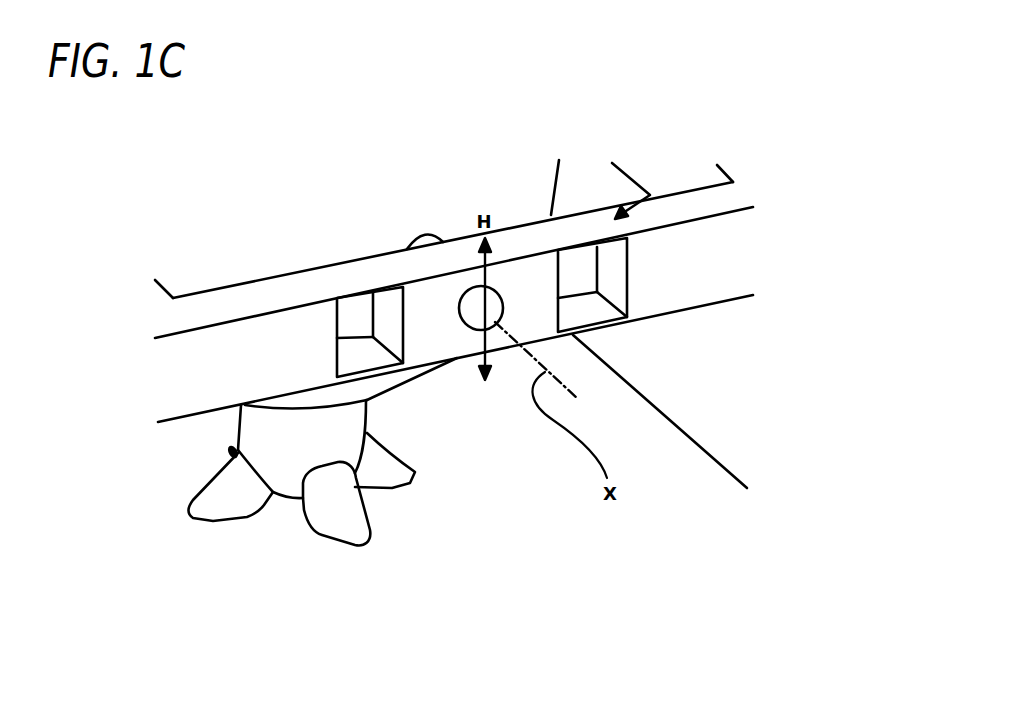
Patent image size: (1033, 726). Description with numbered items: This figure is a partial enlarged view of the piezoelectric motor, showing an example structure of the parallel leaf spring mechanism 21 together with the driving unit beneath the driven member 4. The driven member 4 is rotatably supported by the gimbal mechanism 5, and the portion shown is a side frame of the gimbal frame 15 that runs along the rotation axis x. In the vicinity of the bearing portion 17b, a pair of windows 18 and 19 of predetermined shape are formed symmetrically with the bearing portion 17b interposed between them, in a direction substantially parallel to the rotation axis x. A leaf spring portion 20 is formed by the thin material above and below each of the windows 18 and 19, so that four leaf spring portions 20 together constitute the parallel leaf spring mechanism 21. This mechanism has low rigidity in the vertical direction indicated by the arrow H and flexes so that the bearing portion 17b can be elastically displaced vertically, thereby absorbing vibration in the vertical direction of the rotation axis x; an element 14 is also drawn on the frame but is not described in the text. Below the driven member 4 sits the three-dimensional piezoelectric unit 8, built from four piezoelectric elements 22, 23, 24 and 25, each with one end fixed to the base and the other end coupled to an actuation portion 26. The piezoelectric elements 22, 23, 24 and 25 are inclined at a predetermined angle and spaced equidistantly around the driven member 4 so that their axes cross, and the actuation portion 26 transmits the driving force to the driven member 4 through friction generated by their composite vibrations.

The driven member 4 is at (425, 382).
The gimbal mechanism 5 is at (700, 268).
The three-dimensional piezoelectric unit 8 is at (287, 518).
The projection 14 is at (425, 237).
The gimbal frame 15 is at (214, 290).
The bearing portion 17b is at (498, 288).
The window 18 is at (347, 330).
The window 19 is at (585, 278).
The leaf spring portion 20 is at (360, 292).
The parallel leaf spring mechanism 21 is at (650, 195).
The piezoelectric element 22 is at (216, 508).
The piezoelectric element 23 is at (392, 472).
The piezoelectric element 24 is at (230, 453).
The piezoelectric element 25 is at (345, 522).
The actuation portion 26 is at (265, 435).